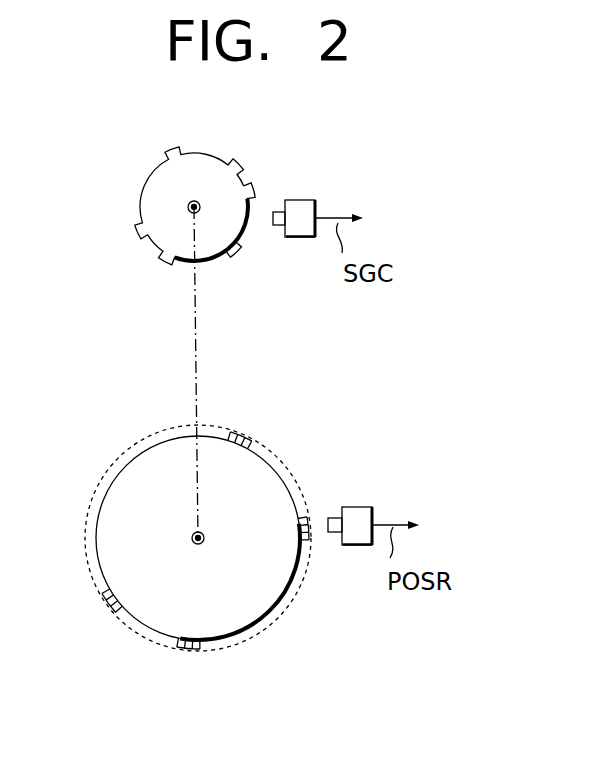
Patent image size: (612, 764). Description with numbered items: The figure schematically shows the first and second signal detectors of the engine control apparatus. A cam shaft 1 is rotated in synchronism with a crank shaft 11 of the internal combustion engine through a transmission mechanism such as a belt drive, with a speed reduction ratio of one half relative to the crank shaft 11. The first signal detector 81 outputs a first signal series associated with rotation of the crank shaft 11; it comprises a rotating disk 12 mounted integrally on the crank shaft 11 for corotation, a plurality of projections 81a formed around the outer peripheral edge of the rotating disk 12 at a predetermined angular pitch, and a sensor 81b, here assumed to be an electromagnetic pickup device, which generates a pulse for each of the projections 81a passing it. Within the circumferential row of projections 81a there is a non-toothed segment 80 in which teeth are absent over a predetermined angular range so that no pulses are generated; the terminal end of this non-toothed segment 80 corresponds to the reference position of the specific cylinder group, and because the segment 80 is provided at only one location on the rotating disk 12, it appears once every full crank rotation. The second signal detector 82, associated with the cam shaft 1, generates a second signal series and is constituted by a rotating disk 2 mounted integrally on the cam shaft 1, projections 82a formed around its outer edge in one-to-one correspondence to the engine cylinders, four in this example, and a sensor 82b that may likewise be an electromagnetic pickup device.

The cam shaft 1 is at (195, 201).
The rotating disk 2 is at (208, 242).
The crank shaft 11 is at (197, 532).
The rotating disk 12 is at (242, 608).
The non-toothed segment 80 is at (288, 480).
The first signal detector 81 is at (416, 522).
The projections 81a is at (253, 442).
The sensor 81b is at (362, 507).
The second signal detector 82 is at (363, 216).
The projections 82a is at (252, 170).
The sensor 82b is at (310, 200).